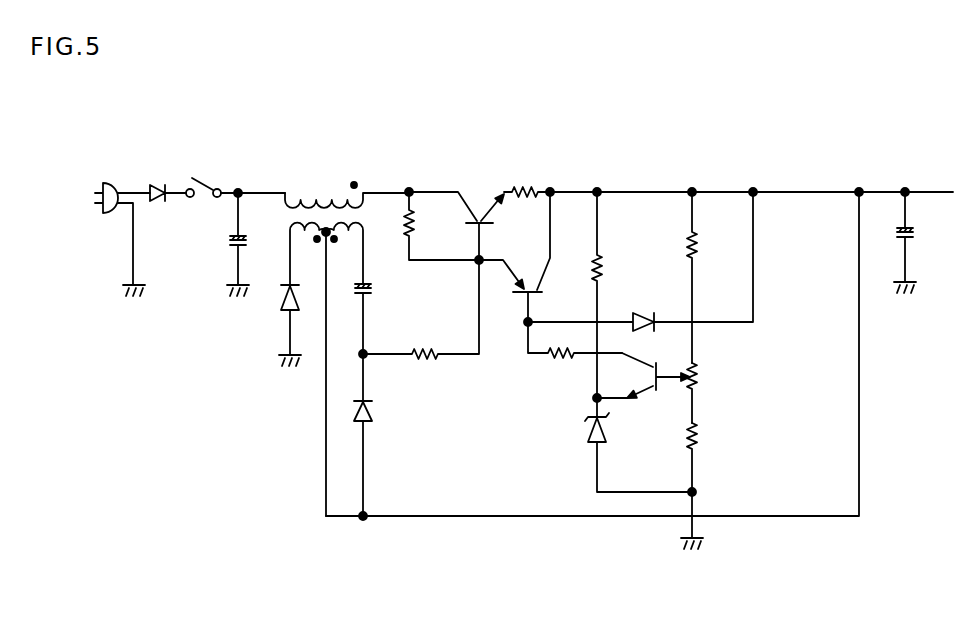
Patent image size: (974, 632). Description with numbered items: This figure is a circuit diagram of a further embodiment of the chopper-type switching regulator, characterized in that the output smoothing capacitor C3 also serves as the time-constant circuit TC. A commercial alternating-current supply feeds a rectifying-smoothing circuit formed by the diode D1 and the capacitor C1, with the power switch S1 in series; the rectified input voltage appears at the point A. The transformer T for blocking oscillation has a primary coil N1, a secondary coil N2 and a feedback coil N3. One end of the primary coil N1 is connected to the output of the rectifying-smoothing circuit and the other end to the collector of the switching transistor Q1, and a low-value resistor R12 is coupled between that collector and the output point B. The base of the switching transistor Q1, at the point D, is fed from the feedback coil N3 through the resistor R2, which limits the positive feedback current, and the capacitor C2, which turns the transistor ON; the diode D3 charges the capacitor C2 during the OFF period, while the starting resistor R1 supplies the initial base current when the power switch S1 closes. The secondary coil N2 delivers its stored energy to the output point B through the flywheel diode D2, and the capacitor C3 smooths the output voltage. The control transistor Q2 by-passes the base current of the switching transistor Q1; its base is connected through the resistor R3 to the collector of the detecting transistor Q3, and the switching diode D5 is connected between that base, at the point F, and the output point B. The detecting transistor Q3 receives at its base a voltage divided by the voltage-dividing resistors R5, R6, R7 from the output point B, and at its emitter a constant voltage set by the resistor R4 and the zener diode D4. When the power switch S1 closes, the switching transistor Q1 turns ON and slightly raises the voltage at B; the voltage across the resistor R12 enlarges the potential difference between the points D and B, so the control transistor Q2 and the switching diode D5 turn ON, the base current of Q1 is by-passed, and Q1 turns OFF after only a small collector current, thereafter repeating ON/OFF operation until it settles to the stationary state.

The diode D1 is at (168, 206).
The power switch S1 is at (212, 179).
The point A is at (242, 188).
The capacitor C1 is at (236, 244).
The transformer T is at (347, 343).
The primary coil N1 is at (347, 189).
The secondary coil N2 is at (308, 254).
The feedback coil N3 is at (376, 216).
The flywheel diode D2 is at (280, 325).
The capacitor C2 is at (359, 313).
The starting resistor R1 is at (441, 224).
The switching transistor Q1 is at (456, 216).
The low-value resistor R12 is at (527, 181).
The control transistor Q2 is at (514, 257).
The point D is at (476, 265).
The point F is at (524, 326).
The resistor R2 is at (419, 325).
The diode D3 is at (376, 437).
The resistor R3 is at (575, 355).
The detecting transistor Q3 is at (643, 375).
The zener diode D4 is at (629, 443).
The resistor R4 is at (610, 295).
The switching diode D5 is at (640, 261).
The voltage-dividing resistor R5 is at (680, 277).
The voltage-dividing resistor R6 is at (706, 393).
The voltage-dividing resistor R7 is at (684, 486).
The output point B is at (861, 185).
The smoothing capacitor C3 is at (901, 242).
The time-constant circuit TC is at (889, 258).